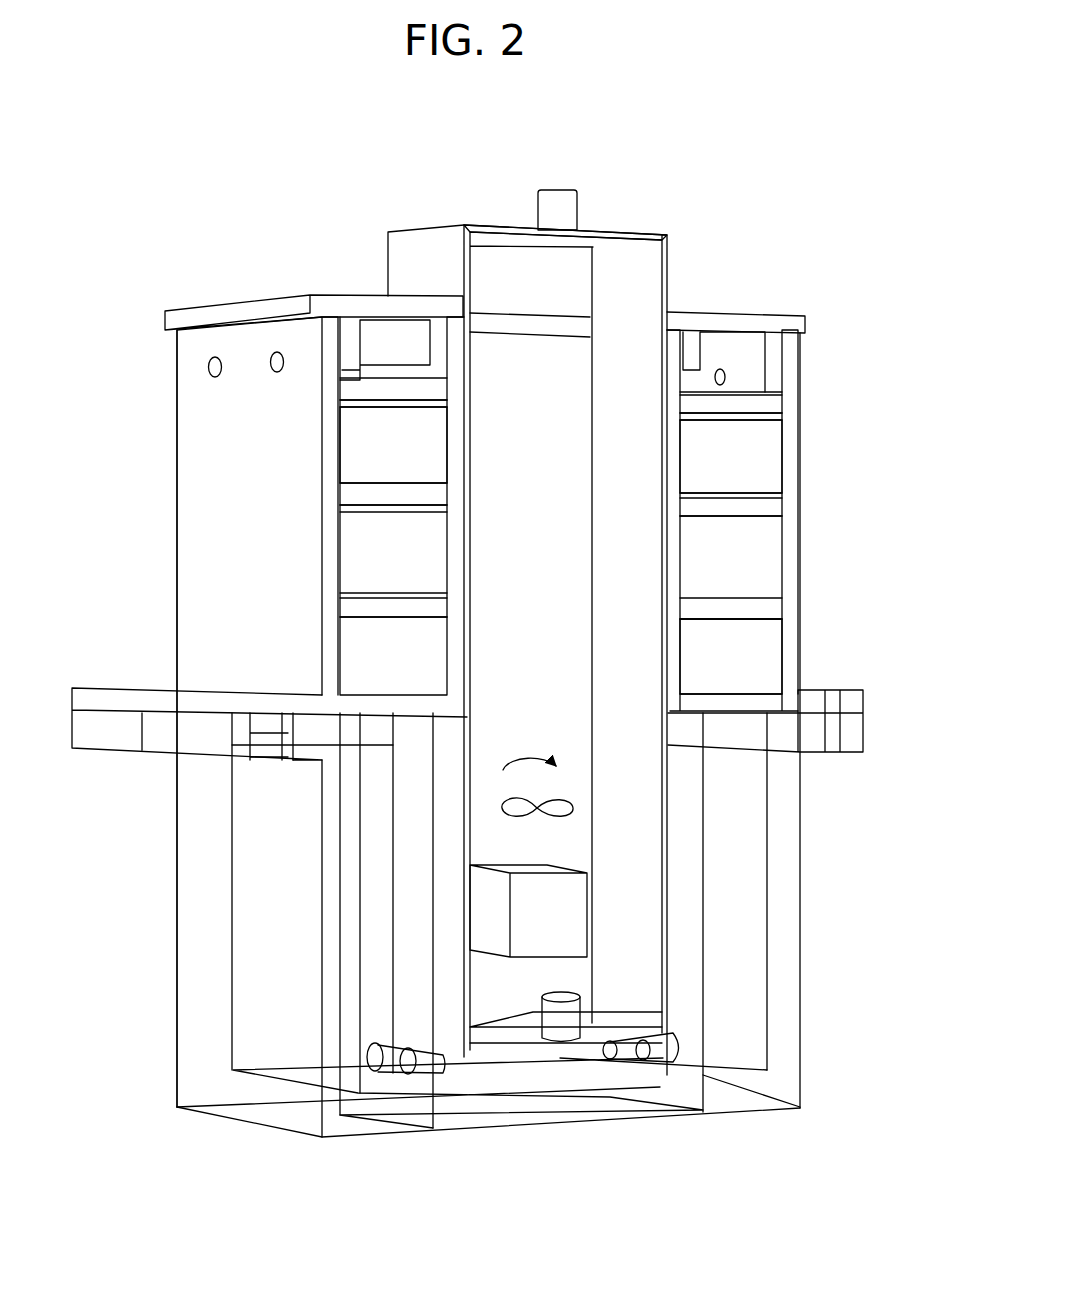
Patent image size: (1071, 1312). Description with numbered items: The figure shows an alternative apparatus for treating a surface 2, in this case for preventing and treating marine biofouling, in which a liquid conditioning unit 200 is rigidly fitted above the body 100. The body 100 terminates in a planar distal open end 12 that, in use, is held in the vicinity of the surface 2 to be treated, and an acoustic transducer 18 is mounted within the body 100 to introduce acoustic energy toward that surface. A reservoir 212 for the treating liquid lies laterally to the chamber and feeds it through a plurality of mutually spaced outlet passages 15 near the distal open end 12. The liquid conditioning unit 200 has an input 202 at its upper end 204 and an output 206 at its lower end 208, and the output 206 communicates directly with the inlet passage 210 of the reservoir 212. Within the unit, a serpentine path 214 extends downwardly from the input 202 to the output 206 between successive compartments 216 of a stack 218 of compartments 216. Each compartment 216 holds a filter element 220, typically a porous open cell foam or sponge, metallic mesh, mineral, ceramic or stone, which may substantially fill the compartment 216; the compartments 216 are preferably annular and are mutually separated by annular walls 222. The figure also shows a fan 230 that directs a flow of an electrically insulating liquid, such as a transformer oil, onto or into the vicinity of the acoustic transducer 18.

The planar surface 2 is at (486, 668).
The distal open end 12 is at (433, 1130).
The outlet passages 15 is at (365, 1053).
The acoustic transducer 18 is at (558, 918).
The body 100 is at (282, 947).
The liquid conditioning unit 200 is at (200, 394).
The input 202 is at (557, 190).
The upper end 204 is at (641, 229).
The output 206 is at (288, 733).
The lower end 208 is at (308, 702).
The inlet passage 210 is at (288, 755).
The reservoir 212 is at (198, 1008).
The serpentine path 214 is at (383, 448).
The compartments 216 is at (760, 441).
The stack 218 is at (777, 662).
The filter element 220 is at (747, 650).
The annular walls 222 is at (328, 394).
The fan 230 is at (573, 808).